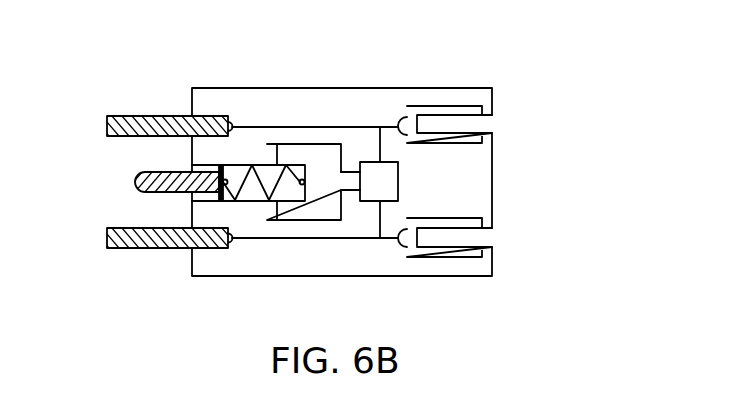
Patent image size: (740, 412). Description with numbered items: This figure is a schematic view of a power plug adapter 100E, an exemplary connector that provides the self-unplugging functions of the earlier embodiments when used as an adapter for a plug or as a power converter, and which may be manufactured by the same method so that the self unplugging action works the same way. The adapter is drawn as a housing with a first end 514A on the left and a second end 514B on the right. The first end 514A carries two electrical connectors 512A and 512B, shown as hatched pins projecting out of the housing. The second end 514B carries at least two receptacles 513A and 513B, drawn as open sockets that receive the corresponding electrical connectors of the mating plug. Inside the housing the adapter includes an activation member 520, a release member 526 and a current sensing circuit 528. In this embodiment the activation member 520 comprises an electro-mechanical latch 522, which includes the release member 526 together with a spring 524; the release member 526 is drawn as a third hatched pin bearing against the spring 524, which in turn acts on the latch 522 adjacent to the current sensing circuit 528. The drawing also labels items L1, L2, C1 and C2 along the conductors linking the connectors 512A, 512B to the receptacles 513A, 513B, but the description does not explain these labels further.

The power plug adapter 100E is at (340, 171).
The first end 514A is at (191, 78).
The second end 514B is at (503, 74).
The electrical connector 512A is at (140, 87).
The electrical connector 512B is at (128, 230).
The activation member 520 is at (314, 152).
The electro-mechanical latch 522 is at (264, 152).
The spring 524 is at (241, 182).
The release member 526 is at (132, 178).
The current sensing circuit 528 is at (390, 158).
The receptacle 513A is at (455, 106).
The receptacle 513B is at (458, 257).
The first lead L1 is at (352, 172).
The second lead L2 is at (266, 240).
The first contact C1 is at (350, 172).
The second contact C2 is at (350, 192).